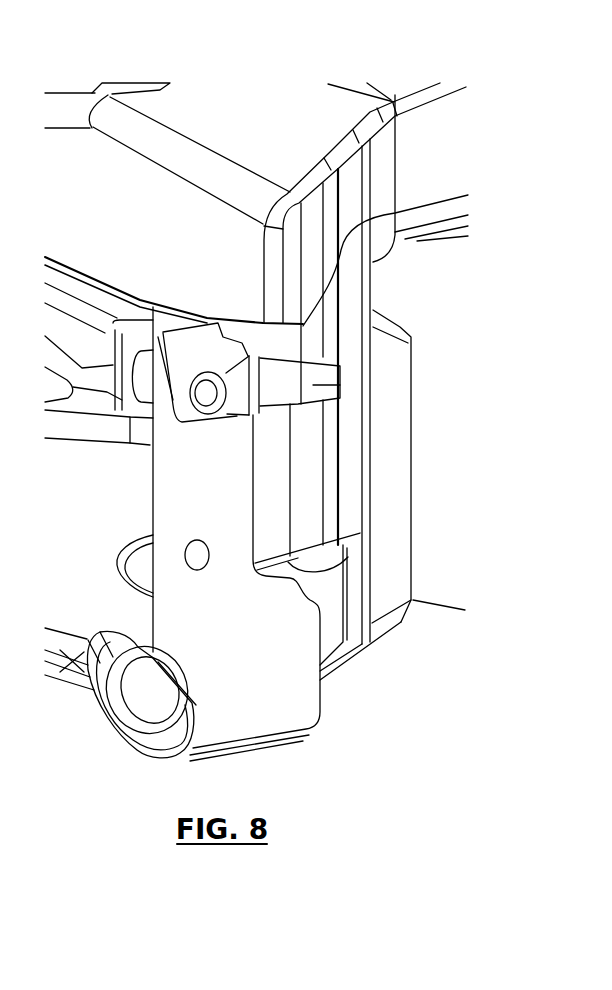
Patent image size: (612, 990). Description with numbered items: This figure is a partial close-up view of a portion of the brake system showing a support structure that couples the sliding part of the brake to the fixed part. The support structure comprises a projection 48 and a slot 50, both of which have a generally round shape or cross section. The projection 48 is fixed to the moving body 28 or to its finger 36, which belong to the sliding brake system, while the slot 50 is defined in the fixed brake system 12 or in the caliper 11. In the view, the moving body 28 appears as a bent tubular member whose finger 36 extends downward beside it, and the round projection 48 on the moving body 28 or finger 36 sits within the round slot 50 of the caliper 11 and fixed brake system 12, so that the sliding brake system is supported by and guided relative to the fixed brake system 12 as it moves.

The moving body 28 is at (289, 113).
The finger 36 is at (317, 503).
The projection 48 is at (233, 393).
The slot 50 is at (184, 403).
The caliper 11 is at (216, 540).
The fixed brake system 12 is at (265, 707).